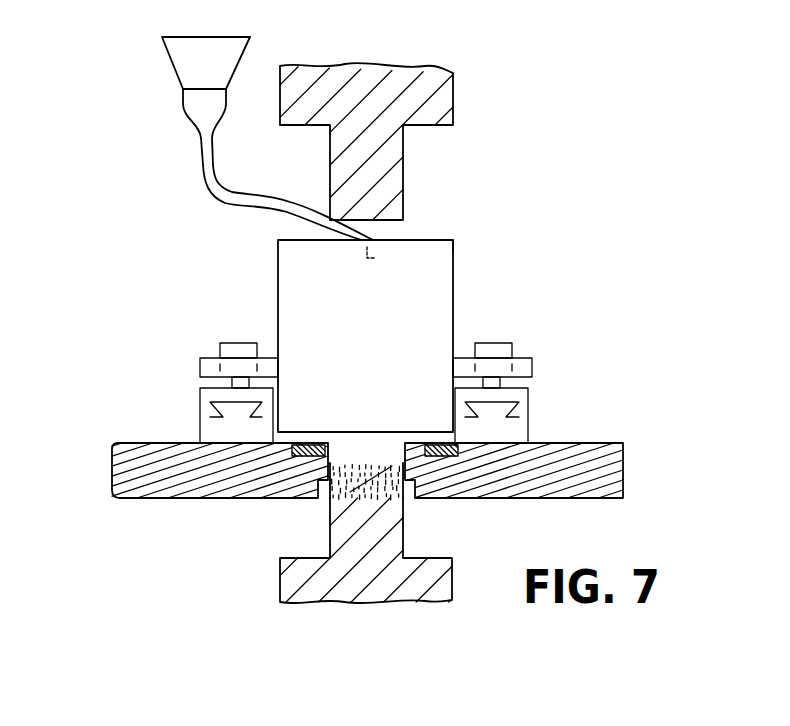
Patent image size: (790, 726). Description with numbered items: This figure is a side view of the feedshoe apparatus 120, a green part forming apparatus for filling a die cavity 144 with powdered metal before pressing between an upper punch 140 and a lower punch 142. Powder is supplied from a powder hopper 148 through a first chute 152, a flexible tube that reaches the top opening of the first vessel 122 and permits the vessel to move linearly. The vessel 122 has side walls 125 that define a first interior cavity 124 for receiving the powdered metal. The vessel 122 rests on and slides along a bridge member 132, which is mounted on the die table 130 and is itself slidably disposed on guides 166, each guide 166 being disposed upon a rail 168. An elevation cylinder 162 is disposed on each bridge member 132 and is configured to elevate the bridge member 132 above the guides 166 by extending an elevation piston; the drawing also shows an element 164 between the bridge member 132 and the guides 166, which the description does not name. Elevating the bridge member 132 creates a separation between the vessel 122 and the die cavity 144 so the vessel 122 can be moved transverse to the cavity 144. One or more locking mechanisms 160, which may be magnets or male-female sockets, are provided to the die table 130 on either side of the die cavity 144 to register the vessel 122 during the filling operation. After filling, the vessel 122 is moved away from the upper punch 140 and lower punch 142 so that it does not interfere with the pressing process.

The feedshoe apparatus 120 is at (530, 64).
The powder hopper 148 is at (195, 53).
The first chute 152 is at (202, 160).
The upper punch 140 is at (393, 175).
The first vessel 122 is at (455, 297).
The first interior cavity 124 is at (277, 270).
The side walls 125 is at (455, 260).
The elevation cylinder 162 is at (221, 345).
The bridge member 132 is at (200, 372).
The clamp neck 164 is at (230, 383).
The guide 166 is at (528, 407).
The rail 168 is at (528, 428).
The die table 130 is at (583, 453).
The locking mechanism 160 is at (290, 460).
The die cavity 144 is at (327, 453).
The lower punch 142 is at (405, 532).